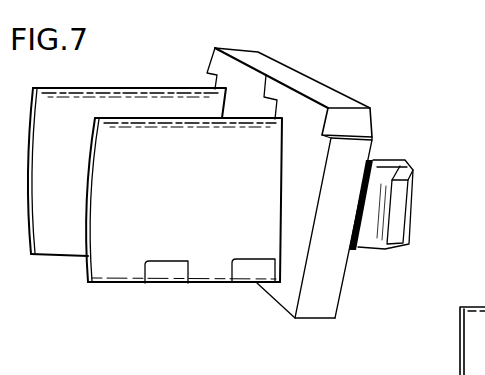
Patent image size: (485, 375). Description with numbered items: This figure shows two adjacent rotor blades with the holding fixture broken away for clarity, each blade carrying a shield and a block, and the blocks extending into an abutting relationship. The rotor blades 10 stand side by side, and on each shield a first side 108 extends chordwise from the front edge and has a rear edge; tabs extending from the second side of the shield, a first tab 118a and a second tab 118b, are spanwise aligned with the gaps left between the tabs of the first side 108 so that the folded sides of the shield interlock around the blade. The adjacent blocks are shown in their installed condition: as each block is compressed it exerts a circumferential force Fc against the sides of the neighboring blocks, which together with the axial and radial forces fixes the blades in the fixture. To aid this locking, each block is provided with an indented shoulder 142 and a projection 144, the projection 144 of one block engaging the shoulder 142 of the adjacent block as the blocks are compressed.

The substrate plate 10 is at (67, 121).
The first side 108 is at (233, 186).
The first tab 118a is at (171, 273).
The second tab 118b is at (247, 269).
The indented shoulder 142 is at (337, 138).
The projection 144 is at (268, 78).
The circumferential force Fc is at (264, 92).